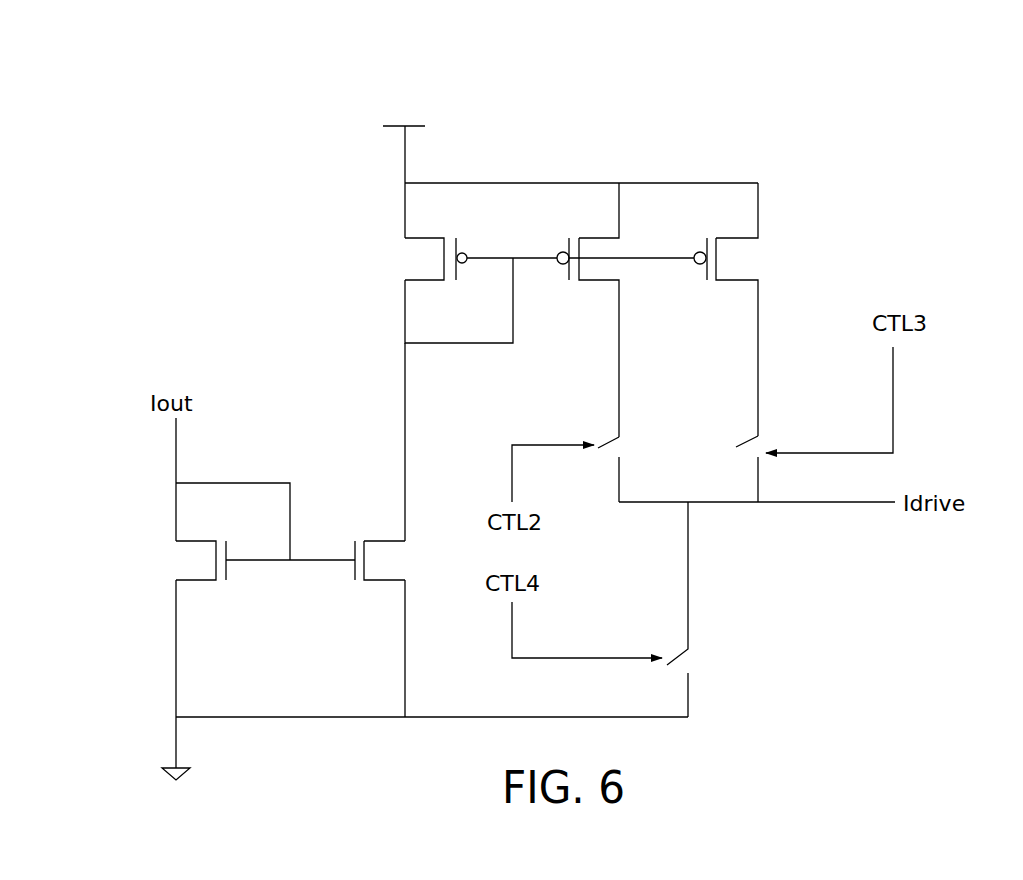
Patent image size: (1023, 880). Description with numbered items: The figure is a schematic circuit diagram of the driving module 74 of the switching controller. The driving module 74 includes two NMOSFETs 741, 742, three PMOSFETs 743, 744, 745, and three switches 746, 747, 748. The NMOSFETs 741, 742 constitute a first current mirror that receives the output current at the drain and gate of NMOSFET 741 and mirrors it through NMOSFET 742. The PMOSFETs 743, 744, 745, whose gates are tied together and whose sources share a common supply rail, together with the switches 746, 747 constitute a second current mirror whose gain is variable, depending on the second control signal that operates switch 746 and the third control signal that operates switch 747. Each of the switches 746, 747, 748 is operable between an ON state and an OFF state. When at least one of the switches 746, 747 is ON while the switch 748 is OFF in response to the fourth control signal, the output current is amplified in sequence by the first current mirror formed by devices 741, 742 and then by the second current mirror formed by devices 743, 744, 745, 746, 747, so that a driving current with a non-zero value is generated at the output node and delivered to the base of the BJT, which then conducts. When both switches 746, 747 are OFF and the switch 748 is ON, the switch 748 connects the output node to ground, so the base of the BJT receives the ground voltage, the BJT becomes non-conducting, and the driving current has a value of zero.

The driving module 74 is at (641, 138).
The NMOSFET 741 is at (200, 541).
The NMOSFET 742 is at (385, 538).
The PMOSFET 743 is at (425, 238).
The PMOSFET 744 is at (590, 235).
The PMOSFET 745 is at (740, 235).
The switch 746 is at (607, 440).
The switch 747 is at (745, 440).
The switch 748 is at (690, 661).